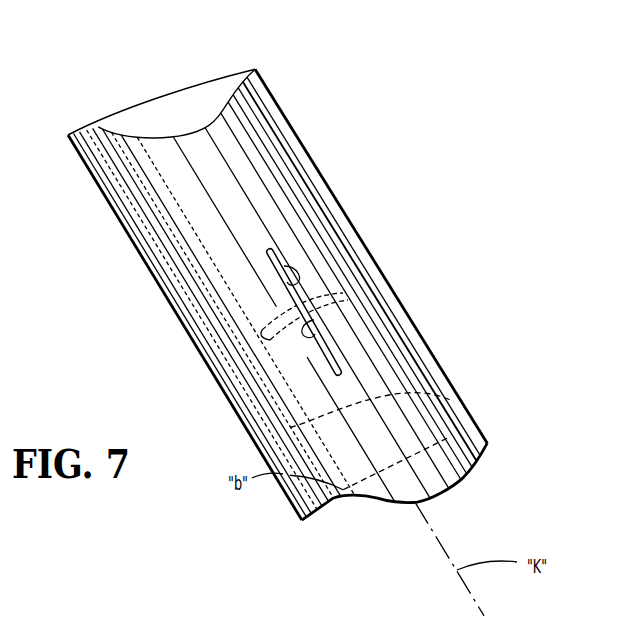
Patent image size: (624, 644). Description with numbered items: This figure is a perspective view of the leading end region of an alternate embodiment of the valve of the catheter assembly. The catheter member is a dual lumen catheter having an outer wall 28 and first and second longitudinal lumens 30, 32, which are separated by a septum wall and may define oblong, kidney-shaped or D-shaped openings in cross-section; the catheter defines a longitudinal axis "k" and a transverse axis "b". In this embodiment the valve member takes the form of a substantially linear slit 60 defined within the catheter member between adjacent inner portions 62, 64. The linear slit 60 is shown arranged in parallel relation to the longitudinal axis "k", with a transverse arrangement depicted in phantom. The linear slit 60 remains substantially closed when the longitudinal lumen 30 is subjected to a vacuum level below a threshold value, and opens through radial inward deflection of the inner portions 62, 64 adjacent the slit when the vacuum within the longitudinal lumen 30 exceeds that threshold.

The outer wall 28 is at (454, 404).
The first longitudinal lumen 30 is at (180, 110).
The second longitudinal lumen 32 is at (231, 401).
The linear slit 60 is at (288, 239).
The inner portion 62 is at (320, 326).
The inner portion 64 is at (283, 275).